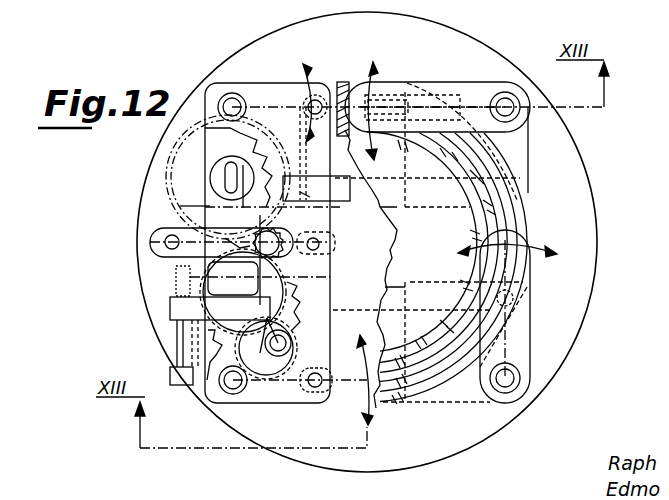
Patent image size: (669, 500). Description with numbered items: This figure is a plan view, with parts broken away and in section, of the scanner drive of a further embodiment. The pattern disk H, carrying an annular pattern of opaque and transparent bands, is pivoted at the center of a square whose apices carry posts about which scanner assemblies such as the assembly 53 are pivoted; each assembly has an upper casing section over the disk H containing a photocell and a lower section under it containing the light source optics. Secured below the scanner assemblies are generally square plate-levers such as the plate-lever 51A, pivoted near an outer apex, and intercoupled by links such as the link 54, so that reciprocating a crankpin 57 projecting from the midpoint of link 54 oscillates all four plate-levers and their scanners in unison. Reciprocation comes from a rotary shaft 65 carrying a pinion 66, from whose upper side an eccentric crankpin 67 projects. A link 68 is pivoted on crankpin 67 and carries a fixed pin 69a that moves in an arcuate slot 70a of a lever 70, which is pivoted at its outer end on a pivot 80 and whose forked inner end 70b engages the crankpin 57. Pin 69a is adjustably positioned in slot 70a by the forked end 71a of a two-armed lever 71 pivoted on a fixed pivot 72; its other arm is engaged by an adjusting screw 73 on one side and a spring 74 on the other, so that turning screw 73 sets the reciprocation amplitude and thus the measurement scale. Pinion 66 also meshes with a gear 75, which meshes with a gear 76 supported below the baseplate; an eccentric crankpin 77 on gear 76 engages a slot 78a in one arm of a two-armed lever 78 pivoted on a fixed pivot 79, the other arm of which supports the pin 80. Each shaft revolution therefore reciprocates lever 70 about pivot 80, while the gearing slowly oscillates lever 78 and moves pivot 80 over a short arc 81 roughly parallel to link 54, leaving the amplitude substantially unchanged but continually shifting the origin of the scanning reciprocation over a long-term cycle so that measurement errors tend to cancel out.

The plate-lever 51A is at (268, 88).
The scanner assembly 53 is at (470, 90).
The link 54 is at (302, 192).
The crankpin 57 is at (362, 240).
The rotary shaft 65 is at (260, 356).
The pinion 66 is at (288, 378).
The crankpin 67 is at (288, 340).
The link 68 is at (290, 333).
The pin 69a is at (290, 238).
The lever 70 is at (225, 250).
The arcuate slot 70a is at (350, 276).
The forked inner end 70b is at (305, 250).
The two-armed lever 71 is at (205, 340).
The forked end 71a is at (299, 152).
The fixed pivot 72 is at (260, 292).
The adjusting screw 73 is at (178, 386).
The spring 74 is at (173, 292).
The gear 75 is at (207, 317).
The gear 76 is at (180, 206).
The crankpin 77 is at (228, 170).
The two-armed lever 78 is at (222, 213).
The slot 78a is at (225, 178).
The fixed pivot 79 is at (177, 270).
The pivot 80 is at (165, 242).
The arc 81 is at (172, 224).
The pattern disk H is at (512, 164).